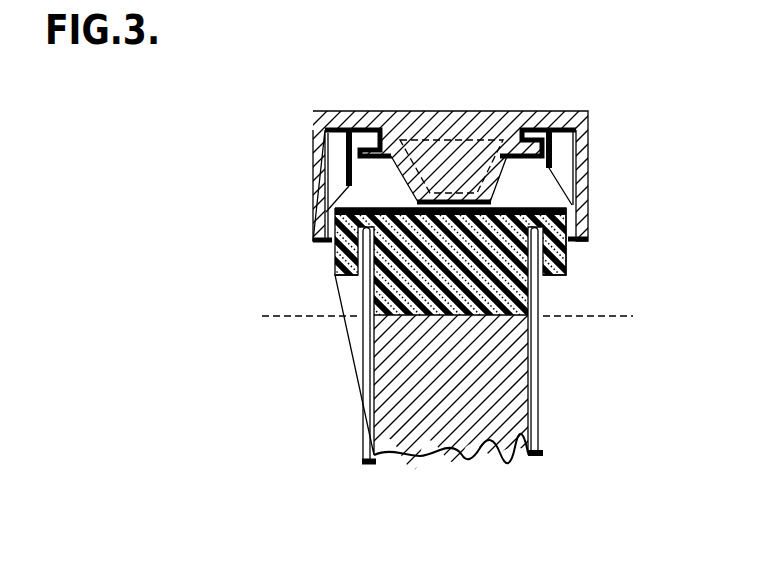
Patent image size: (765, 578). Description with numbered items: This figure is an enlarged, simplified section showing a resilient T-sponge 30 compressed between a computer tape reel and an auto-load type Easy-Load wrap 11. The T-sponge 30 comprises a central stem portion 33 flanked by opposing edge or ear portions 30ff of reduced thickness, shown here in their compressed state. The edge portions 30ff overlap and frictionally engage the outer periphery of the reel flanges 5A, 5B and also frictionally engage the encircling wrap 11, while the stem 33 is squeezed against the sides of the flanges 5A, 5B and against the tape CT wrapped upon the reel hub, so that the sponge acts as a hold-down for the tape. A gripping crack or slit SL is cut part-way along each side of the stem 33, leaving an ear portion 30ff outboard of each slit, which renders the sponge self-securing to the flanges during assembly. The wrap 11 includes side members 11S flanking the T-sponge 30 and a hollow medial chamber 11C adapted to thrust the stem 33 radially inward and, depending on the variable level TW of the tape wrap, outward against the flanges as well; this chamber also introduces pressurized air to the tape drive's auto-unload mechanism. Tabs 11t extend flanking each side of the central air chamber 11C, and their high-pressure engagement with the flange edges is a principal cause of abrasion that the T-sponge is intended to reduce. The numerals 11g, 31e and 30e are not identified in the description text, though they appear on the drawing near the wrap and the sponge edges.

The Easy-Load wrap 11 is at (486, 112).
The tabs 11t is at (367, 120).
The cap gasket 11g is at (318, 150).
The medial chamber 11C is at (488, 174).
The side members 11S is at (313, 213).
The T-sponge 30 is at (500, 327).
The stem portion 33 is at (462, 279).
The edge portions 30ff is at (382, 207).
The tape CT is at (460, 413).
The slit SL is at (358, 278).
The left edge 31e is at (320, 261).
The right edge 30e is at (580, 259).
The level of tape wrap TW is at (447, 316).
The reel flange 5A is at (364, 483).
The reel flange 5B is at (545, 471).